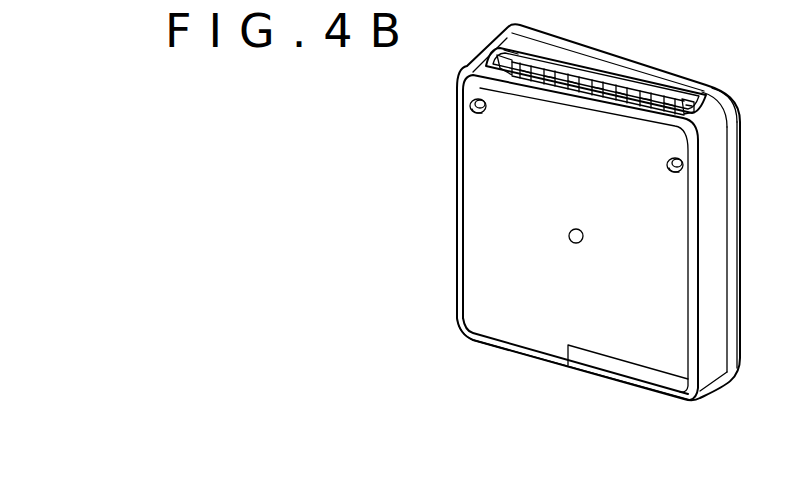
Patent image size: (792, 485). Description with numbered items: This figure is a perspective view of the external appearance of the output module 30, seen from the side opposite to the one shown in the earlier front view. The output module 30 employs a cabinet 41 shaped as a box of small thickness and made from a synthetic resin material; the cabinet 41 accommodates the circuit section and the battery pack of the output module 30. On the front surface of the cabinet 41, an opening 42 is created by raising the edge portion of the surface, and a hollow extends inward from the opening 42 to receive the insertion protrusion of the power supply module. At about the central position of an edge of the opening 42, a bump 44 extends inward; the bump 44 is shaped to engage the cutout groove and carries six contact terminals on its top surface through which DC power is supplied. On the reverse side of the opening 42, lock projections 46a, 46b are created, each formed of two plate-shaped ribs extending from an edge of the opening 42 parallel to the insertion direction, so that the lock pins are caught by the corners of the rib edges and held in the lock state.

The output module 30 is at (456, 305).
The cabinet 41 is at (457, 236).
The opening 42 is at (497, 63).
The bump 44 is at (603, 86).
The lock projection 46a is at (700, 98).
The lock projection 46b is at (556, 52).